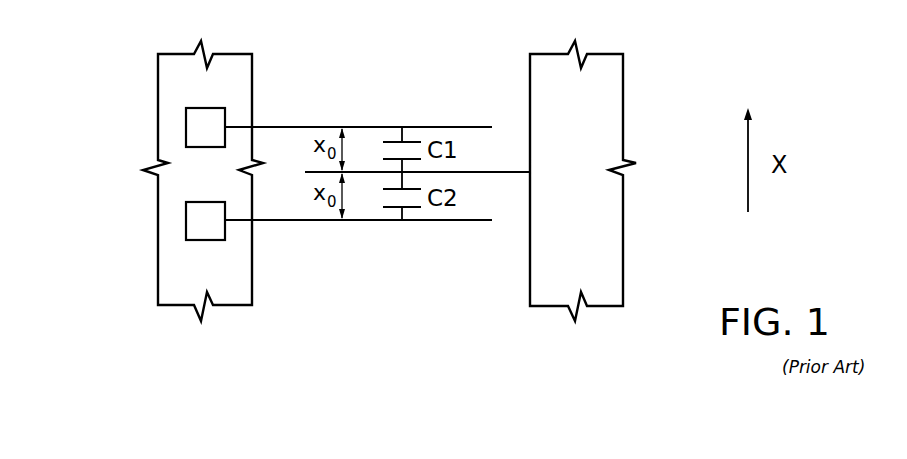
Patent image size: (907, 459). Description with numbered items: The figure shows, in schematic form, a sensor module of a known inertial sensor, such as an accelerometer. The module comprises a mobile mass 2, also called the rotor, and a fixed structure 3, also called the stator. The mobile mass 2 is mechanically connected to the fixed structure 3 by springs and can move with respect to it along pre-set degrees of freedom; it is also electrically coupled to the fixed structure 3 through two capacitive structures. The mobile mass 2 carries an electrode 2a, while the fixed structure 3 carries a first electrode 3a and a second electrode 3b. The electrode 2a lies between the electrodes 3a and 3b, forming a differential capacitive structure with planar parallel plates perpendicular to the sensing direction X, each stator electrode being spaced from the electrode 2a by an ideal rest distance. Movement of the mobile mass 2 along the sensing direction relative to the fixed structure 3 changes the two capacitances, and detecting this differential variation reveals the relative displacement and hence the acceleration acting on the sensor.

The mobile mass 2 is at (618, 102).
The electrode 2a is at (503, 176).
The fixed structure 3 is at (170, 295).
The first electrode 3a is at (322, 125).
The second electrode 3b is at (300, 223).